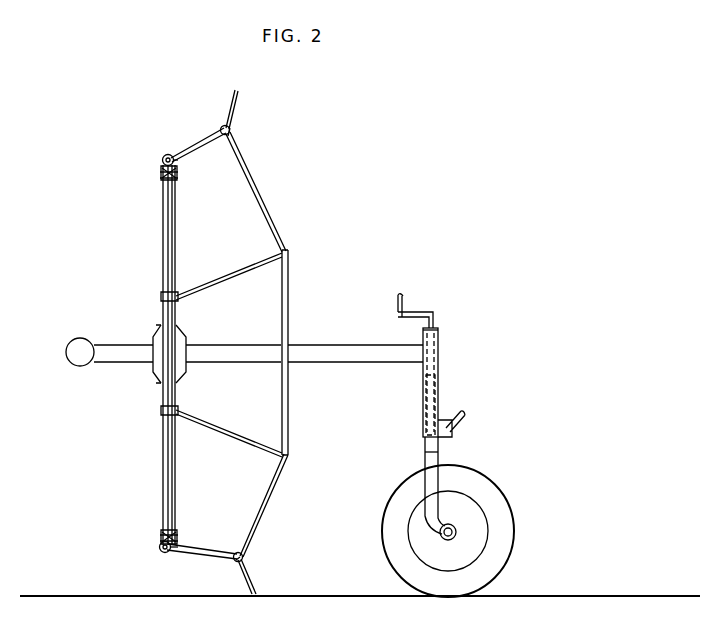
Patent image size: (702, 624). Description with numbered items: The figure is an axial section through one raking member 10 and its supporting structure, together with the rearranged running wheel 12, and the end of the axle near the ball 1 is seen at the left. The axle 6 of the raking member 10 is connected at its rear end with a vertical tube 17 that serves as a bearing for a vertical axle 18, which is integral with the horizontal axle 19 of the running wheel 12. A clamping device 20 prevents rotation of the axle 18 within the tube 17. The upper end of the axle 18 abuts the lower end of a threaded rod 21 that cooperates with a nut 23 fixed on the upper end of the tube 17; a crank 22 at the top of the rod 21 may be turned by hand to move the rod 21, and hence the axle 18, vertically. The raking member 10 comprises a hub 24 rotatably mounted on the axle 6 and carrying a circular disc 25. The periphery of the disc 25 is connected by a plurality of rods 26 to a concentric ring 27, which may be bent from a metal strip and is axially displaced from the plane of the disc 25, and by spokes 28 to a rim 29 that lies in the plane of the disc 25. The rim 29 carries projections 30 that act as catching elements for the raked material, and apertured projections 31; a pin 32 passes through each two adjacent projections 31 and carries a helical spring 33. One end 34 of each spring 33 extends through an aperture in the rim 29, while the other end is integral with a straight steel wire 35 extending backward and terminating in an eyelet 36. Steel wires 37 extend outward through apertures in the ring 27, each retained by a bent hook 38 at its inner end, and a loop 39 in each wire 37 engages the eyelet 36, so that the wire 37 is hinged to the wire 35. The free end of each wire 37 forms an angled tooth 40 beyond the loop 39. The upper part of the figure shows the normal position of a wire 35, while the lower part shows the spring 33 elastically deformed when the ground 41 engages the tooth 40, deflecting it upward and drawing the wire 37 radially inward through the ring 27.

The ball handle 1 is at (82, 362).
The axle 6 is at (342, 350).
The raking member 10 is at (120, 453).
The running wheel 12 is at (502, 551).
The vertical tube 17 is at (423, 384).
The vertical axle 18 is at (424, 449).
The horizontal axle 19 is at (442, 538).
The clamping device 20 is at (462, 420).
The threaded rod 21 is at (438, 350).
The crank 22 is at (403, 298).
The nut 23 is at (438, 332).
The hub 24 is at (155, 368).
The circular disc 25 is at (178, 302).
The rods 26 is at (206, 286).
The concentric ring 27 is at (289, 386).
The spokes 28 is at (175, 208).
The rim 29 is at (177, 178).
The projections 30 is at (160, 173).
The apertured projections 31 is at (162, 160).
The pin 32 is at (170, 154).
The helical spring 33 is at (175, 162).
The end 34 is at (163, 176).
The straight steel wire 35 is at (197, 146).
The eyelet 36 is at (221, 126).
The steel wire 37 is at (257, 170).
The bent hook 38 is at (290, 252).
The loop 39 is at (229, 114).
The tooth 40 is at (236, 106).
The ground 41 is at (278, 596).